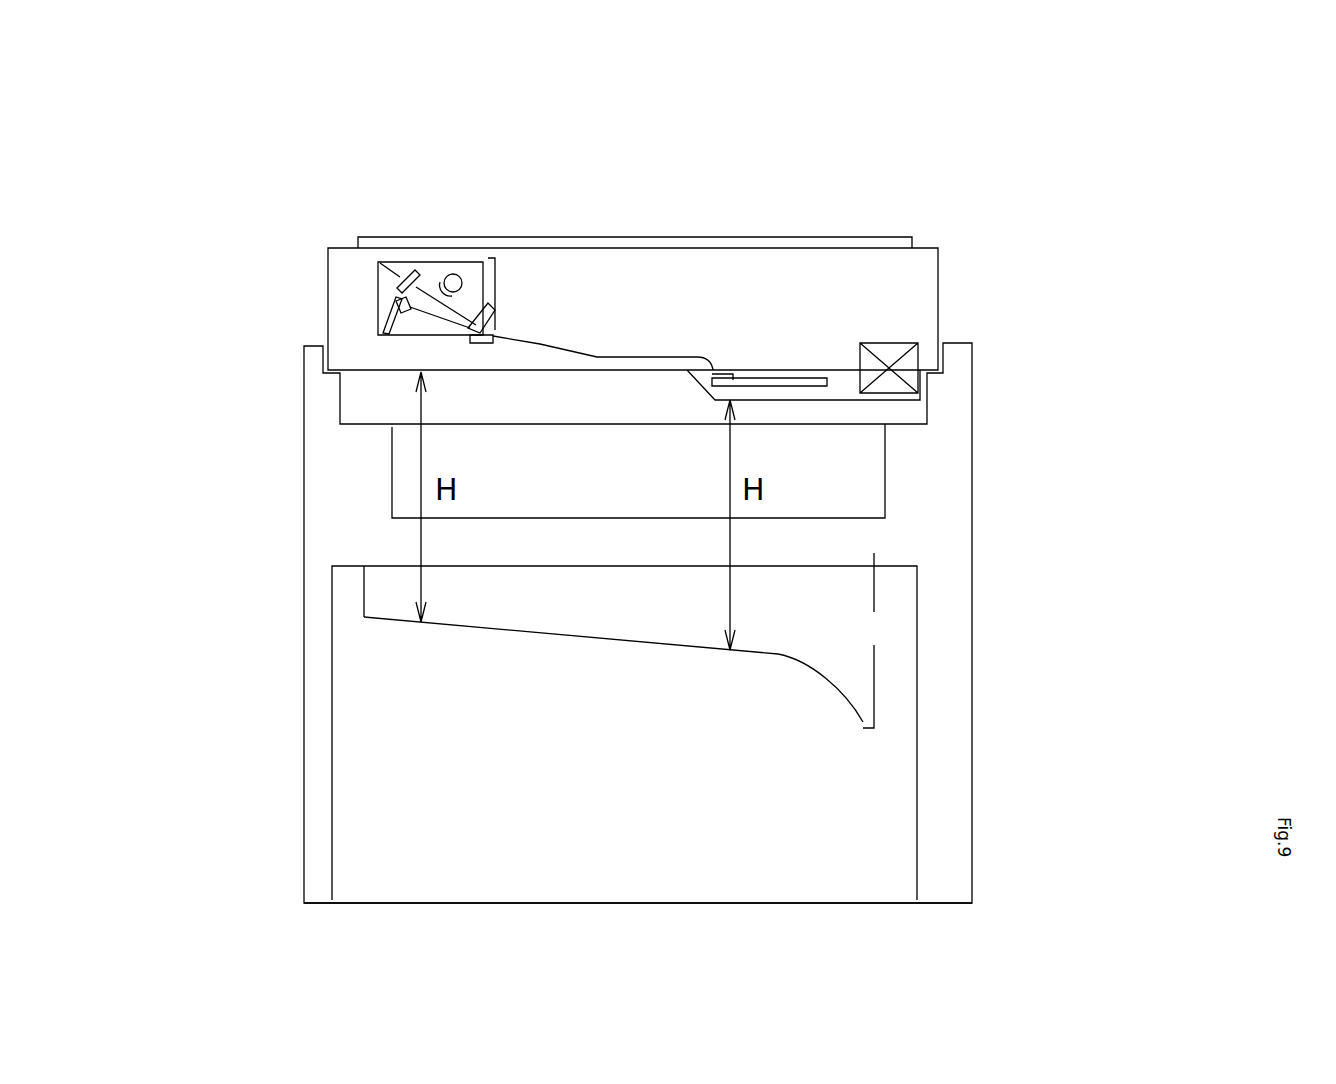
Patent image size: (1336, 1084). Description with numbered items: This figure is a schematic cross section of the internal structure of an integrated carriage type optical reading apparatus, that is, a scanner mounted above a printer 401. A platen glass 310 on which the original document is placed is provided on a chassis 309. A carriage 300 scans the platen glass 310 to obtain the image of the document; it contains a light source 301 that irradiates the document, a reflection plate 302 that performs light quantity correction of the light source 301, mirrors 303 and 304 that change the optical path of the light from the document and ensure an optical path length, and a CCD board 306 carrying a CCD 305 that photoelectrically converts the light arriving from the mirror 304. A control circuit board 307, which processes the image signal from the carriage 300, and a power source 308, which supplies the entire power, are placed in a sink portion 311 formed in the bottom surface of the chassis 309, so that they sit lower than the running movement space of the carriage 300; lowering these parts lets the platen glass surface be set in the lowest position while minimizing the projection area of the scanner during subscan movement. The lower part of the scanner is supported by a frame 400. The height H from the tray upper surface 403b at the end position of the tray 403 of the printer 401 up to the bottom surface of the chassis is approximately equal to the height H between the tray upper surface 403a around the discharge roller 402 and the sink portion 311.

The carriage 300 is at (400, 262).
The light source 301 is at (450, 275).
The reflection plate 302 is at (441, 286).
The mirror 303 is at (493, 310).
The mirror 304 is at (378, 262).
The CCD 305 is at (400, 305).
The CCD board 306 is at (390, 310).
The control circuit board 307 is at (807, 377).
The power source 308 is at (900, 353).
The chassis 309 is at (943, 252).
The platen glass 310 is at (790, 237).
The sink portion 311 is at (838, 400).
The frame 400 is at (322, 455).
The printer 401 is at (778, 773).
The discharge roller 402 is at (893, 637).
The tray 403 is at (582, 642).
The tray upper surface 403a is at (731, 652).
The tray upper surface 403b is at (418, 625).